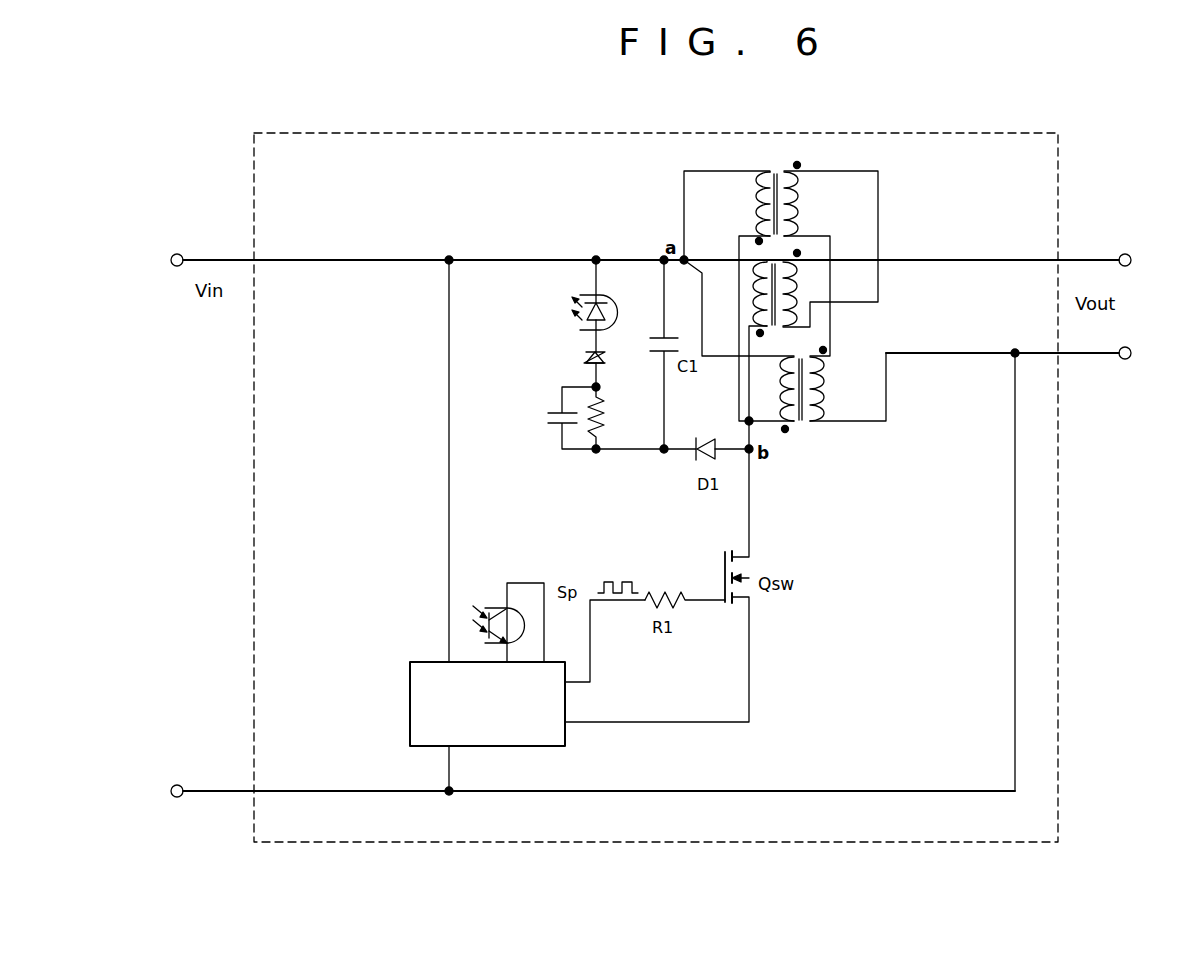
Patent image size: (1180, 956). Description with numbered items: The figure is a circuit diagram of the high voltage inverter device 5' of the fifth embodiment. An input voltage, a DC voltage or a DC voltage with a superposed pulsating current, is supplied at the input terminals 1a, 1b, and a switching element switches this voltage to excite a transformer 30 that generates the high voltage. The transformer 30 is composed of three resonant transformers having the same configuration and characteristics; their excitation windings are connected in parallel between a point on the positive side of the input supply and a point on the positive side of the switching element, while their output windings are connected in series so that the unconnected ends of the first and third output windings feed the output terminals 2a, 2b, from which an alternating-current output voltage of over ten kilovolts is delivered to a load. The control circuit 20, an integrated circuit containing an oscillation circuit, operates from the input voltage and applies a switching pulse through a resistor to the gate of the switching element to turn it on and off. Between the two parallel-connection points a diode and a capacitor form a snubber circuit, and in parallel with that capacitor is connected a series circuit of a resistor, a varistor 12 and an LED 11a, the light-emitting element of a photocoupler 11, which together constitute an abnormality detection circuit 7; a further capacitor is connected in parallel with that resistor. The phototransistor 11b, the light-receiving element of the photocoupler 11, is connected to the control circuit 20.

The input terminal 1a is at (177, 253).
The input terminal 1b is at (177, 797).
The output terminal 2a is at (1125, 253).
The output terminal 2b is at (1123, 359).
The high voltage inverter device 5' is at (700, 487).
The abnormality detection circuit 7 is at (558, 464).
The photocoupler 11 is at (589, 298).
The LED 11a is at (604, 313).
The phototransistor 11b is at (497, 607).
The varistor 12 is at (585, 357).
The control circuit 20 is at (409, 703).
The transformer 30 is at (896, 218).